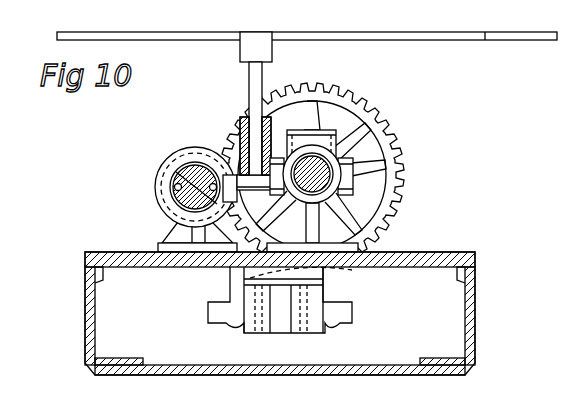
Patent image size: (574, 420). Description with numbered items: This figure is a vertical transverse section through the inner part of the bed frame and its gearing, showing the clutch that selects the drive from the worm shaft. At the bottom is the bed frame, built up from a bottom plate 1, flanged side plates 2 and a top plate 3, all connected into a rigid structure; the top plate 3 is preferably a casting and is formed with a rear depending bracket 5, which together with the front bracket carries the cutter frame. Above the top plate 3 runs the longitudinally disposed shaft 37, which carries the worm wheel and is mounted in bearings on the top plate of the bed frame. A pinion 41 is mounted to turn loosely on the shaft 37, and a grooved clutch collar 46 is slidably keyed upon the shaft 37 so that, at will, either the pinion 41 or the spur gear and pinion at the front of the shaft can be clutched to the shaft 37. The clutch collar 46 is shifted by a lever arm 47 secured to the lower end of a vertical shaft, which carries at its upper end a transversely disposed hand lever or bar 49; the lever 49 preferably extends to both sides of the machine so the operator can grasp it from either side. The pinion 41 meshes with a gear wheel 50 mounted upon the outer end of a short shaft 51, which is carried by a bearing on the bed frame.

The bottom plate 1 is at (274, 331).
The flanged side plates 2 is at (85, 297).
The top plate 3 is at (182, 268).
The rear depending bracket 5 is at (225, 312).
The shaft 37 is at (176, 188).
The pinion 41 is at (160, 160).
The clutch collar 46 is at (174, 184).
The lever arm 47 is at (256, 165).
The hand lever 49 is at (331, 41).
The gear wheel 50 is at (391, 192).
The short shaft 51 is at (338, 158).